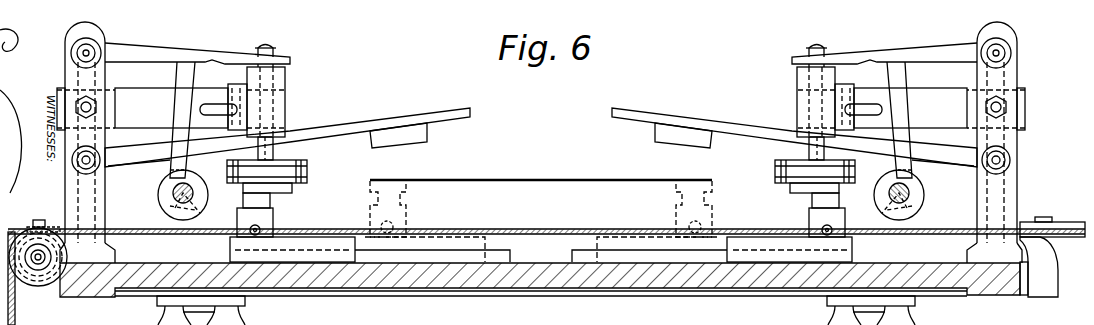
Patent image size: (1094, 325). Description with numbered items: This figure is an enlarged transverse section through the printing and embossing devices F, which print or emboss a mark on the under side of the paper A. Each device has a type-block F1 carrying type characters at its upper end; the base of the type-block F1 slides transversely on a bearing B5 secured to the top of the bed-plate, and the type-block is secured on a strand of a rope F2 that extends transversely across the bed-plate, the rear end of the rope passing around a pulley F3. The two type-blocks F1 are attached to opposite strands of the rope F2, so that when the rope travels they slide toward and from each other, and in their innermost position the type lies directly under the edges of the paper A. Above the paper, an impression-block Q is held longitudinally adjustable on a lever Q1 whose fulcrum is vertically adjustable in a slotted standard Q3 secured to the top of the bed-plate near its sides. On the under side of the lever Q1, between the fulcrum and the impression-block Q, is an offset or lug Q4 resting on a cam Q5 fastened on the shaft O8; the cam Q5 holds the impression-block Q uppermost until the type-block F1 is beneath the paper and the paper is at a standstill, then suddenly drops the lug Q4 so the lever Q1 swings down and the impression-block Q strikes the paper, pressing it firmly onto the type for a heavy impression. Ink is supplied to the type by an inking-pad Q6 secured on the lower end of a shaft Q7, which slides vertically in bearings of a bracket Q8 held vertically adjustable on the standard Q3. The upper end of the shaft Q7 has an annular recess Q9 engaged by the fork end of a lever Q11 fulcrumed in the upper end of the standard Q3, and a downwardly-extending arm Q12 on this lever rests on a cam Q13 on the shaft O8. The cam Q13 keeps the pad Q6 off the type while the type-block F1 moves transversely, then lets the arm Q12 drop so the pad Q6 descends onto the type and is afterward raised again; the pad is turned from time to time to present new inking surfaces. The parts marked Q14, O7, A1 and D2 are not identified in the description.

The slotted standard Q3 is at (75, 198).
The lever Q11 is at (227, 53).
The connecting link Q14 is at (186, 80).
The downwardly-extending arm Q12 is at (910, 82).
The printing and embossing device F is at (348, 84).
The lever Q1 is at (352, 130).
The impression-block Q is at (412, 144).
The bracket Q8 is at (284, 108).
The annular recess Q9 is at (279, 48).
The shaft Q7 is at (275, 152).
The inking-pad Q6 is at (306, 177).
The type-block F1 is at (273, 200).
The crank disk O7 is at (215, 193).
The shaft O8 is at (914, 195).
The cam Q13 is at (200, 197).
The cam Q5 is at (178, 208).
The offset or lug Q4 is at (168, 162).
The support A1 is at (542, 195).
The paper A is at (582, 178).
The rope F2 is at (510, 228).
The bearing B5 is at (508, 251).
The bed D2 is at (453, 289).
The pulley F3 is at (1060, 222).